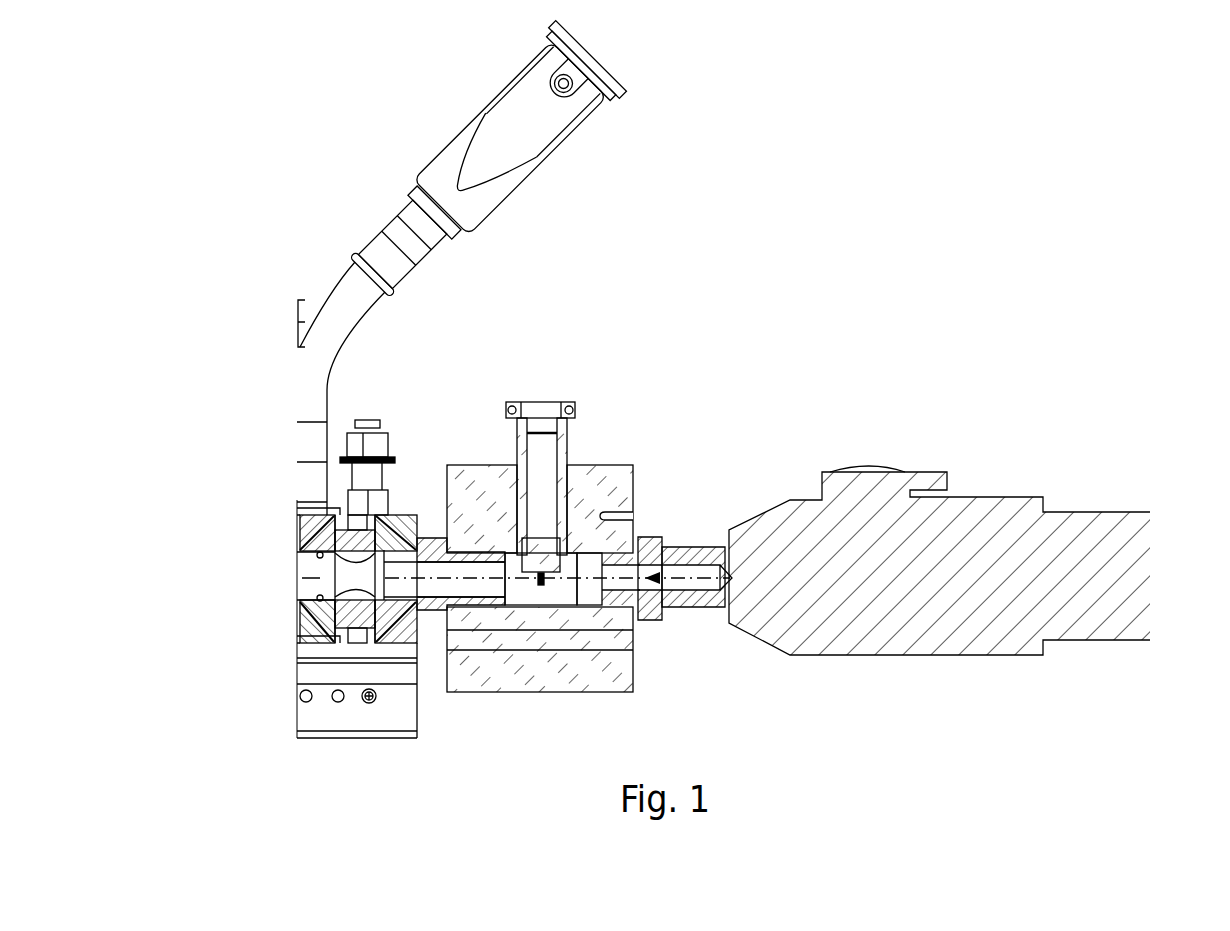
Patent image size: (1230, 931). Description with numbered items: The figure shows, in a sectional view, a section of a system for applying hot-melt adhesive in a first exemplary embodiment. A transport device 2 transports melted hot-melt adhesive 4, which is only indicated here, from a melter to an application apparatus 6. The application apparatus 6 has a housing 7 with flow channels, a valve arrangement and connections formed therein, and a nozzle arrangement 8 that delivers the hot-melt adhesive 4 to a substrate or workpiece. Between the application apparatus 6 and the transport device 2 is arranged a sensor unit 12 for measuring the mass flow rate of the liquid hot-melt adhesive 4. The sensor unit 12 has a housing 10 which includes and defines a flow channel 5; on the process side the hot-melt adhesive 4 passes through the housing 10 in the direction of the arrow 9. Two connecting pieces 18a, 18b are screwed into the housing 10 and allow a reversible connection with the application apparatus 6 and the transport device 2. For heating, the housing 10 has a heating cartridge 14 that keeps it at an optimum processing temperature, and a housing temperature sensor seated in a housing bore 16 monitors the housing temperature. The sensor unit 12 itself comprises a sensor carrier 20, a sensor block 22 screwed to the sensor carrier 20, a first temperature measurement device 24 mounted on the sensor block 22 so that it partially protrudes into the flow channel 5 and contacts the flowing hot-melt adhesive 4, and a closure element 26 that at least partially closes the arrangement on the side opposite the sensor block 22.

The transport device 2 is at (1006, 465).
The hot-melt adhesive 4 is at (598, 600).
The flow channel 5 is at (523, 592).
The application apparatus 6 is at (253, 531).
The housing 7 is at (312, 541).
The nozzle arrangement 8 is at (322, 718).
The arrow 9 is at (267, 579).
The housing 10 is at (468, 500).
The sensor unit 12 is at (615, 553).
The heating cartridge 14 is at (573, 645).
The housing bore 16 is at (638, 525).
The connecting piece 18a is at (652, 545).
The connecting piece 18b is at (433, 537).
The sensor carrier 20 is at (562, 440).
The sensor block 22 is at (548, 570).
The first temperature measurement device 24 is at (542, 584).
The closure element 26 is at (543, 405).